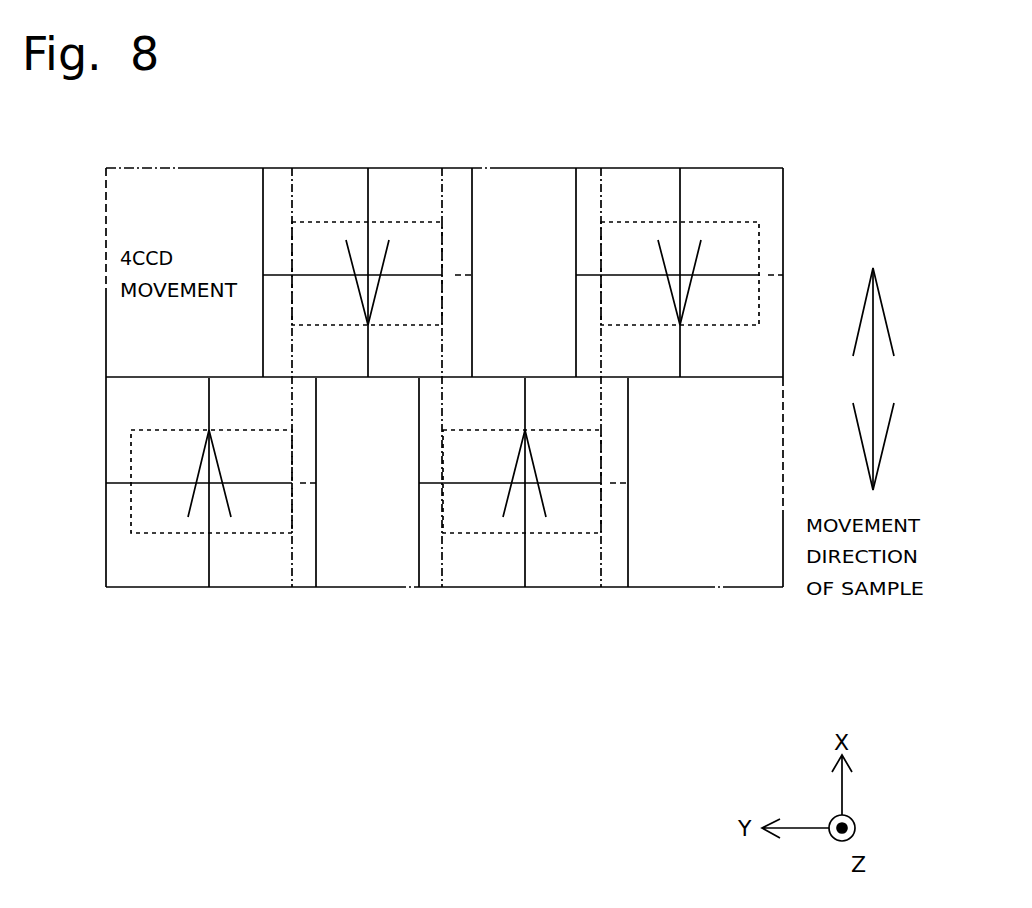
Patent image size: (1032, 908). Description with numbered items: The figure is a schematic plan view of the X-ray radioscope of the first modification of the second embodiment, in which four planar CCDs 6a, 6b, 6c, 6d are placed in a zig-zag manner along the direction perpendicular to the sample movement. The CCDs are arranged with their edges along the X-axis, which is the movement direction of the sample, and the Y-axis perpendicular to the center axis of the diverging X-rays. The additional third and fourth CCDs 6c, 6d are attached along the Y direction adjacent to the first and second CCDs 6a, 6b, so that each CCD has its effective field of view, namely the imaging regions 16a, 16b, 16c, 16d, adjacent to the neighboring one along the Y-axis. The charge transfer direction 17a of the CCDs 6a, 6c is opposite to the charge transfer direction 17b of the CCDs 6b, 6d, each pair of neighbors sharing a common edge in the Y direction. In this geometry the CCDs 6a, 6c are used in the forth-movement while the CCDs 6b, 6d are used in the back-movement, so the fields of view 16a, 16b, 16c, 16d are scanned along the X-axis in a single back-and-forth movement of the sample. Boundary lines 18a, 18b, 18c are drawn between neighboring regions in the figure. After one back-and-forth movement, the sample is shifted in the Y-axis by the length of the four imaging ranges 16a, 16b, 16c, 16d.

The planar CCD 6a is at (783, 208).
The planar CCD 6b is at (418, 530).
The third CCD 6c is at (263, 237).
The fourth CCD 6d is at (98, 560).
The imaging region 16a is at (628, 223).
The imaging region 16b is at (473, 530).
The imaging region 16c is at (410, 221).
The imaging region 16d is at (255, 533).
The charge transfer direction 17a is at (783, 152).
The charge transfer direction 17b is at (210, 495).
The boundary line 18a is at (607, 462).
The boundary line 18b is at (442, 248).
The boundary line 18c is at (293, 458).